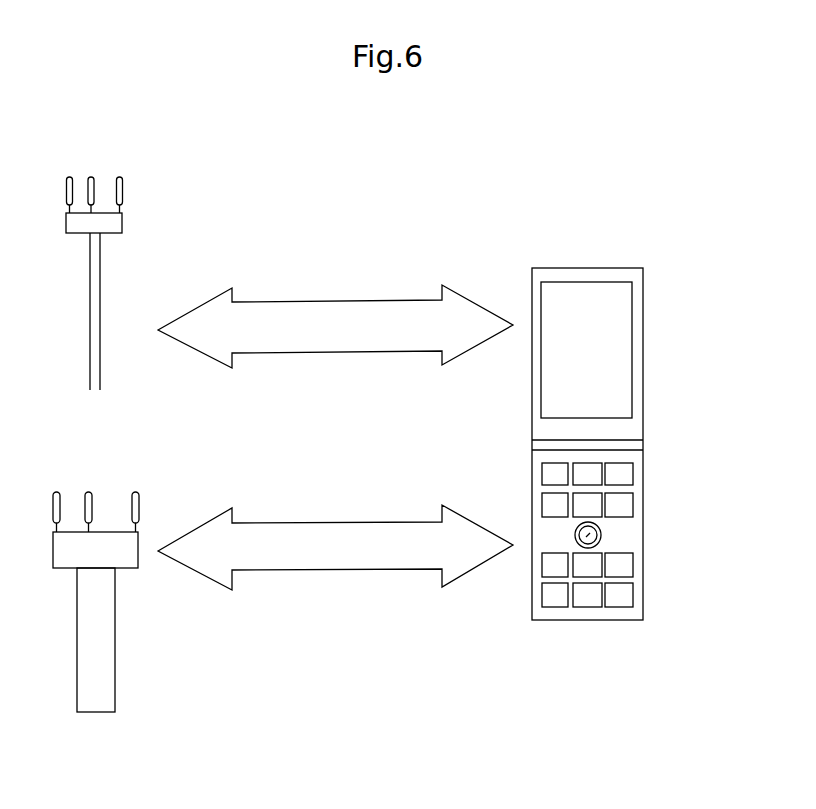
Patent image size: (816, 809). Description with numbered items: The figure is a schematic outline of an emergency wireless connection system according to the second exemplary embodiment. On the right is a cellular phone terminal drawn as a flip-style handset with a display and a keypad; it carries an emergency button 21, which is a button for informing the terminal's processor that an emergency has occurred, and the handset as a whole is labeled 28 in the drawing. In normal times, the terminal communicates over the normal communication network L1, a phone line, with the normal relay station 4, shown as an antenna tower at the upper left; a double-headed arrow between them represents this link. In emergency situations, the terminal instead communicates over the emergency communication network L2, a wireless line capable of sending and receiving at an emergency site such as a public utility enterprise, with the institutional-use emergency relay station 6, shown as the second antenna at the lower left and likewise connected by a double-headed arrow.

The normal relay station 4 is at (143, 237).
The emergency relay station 6 is at (131, 635).
The emergency button 21 is at (602, 527).
The mobile phone terminal 28 is at (633, 456).
The normal communication network L1 is at (390, 301).
The emergency communication network L2 is at (395, 571).